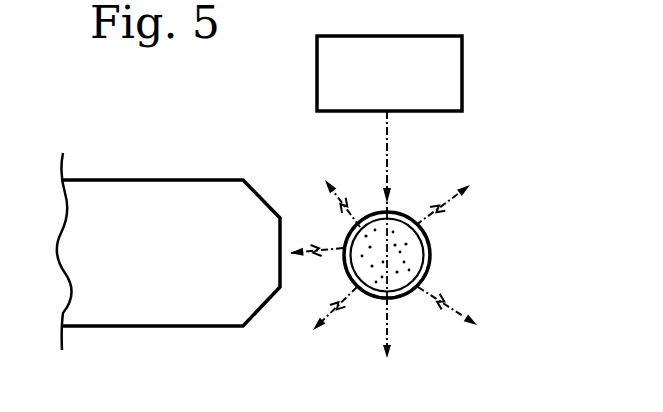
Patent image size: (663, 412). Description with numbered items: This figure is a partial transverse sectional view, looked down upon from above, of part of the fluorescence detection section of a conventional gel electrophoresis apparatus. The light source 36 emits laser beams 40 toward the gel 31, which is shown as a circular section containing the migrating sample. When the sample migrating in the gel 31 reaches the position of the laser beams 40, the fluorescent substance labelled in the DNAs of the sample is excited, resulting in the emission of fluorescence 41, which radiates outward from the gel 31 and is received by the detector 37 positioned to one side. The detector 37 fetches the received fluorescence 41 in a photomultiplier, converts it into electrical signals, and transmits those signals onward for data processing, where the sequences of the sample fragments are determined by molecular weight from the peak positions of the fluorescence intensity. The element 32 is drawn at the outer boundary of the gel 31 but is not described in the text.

The gel 31 is at (404, 298).
The sample cell 32 is at (431, 249).
The light source 36 is at (462, 63).
The detector 37 is at (218, 180).
The laser beams 40 is at (389, 145).
The fluorescence 41 is at (337, 318).